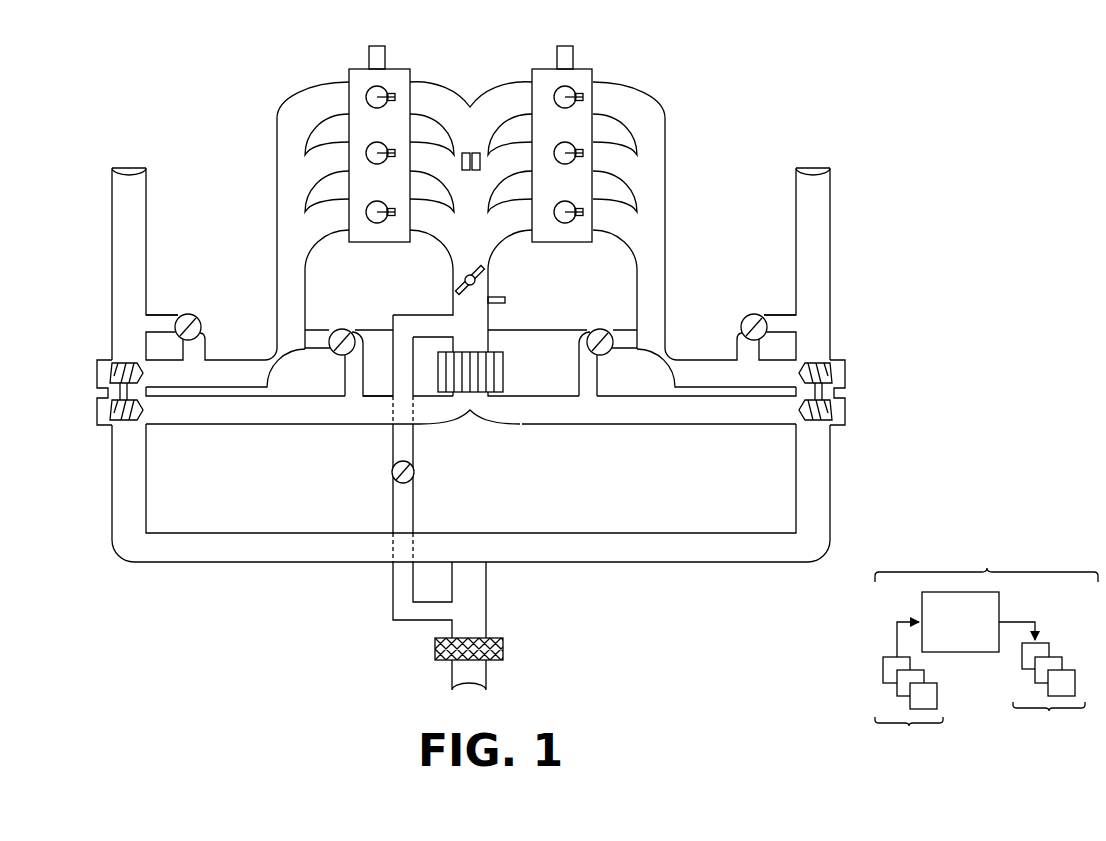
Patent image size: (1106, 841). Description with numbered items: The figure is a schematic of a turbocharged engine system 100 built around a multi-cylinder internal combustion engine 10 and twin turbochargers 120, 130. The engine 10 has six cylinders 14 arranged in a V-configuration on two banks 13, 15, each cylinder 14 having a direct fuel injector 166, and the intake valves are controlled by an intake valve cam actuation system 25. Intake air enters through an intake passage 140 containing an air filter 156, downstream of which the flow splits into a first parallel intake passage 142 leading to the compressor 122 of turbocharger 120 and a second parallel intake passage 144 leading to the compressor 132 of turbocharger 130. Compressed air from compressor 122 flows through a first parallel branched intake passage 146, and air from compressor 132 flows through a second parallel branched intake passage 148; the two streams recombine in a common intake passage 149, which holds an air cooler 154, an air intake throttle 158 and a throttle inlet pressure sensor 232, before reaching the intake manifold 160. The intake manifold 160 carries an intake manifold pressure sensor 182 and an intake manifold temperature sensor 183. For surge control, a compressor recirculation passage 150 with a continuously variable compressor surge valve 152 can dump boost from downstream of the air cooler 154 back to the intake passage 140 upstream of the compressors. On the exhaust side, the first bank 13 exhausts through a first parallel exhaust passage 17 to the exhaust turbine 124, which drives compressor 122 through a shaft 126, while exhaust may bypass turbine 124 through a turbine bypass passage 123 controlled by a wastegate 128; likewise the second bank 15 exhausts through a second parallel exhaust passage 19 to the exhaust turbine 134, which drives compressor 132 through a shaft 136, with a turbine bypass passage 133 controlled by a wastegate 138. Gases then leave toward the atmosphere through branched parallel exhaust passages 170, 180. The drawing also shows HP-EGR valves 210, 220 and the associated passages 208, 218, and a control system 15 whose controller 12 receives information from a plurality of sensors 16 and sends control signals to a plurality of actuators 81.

The internal combustion engine 10 is at (796, 69).
The turbocharged engine system 100 is at (1026, 67).
The intake manifold 160 is at (468, 84).
The second bank of cylinders / control system 15 is at (362, 69).
The first bank of cylinders 13 is at (583, 68).
The intake valve cam actuation system 25 is at (376, 49).
The cylinder 14 is at (561, 147).
The fuel injector 166 is at (576, 152).
The intake manifold pressure sensor 182 is at (462, 169).
The intake manifold temperature sensor 183 is at (480, 169).
The second parallel exhaust passage 19 is at (275, 289).
The first parallel exhaust passage 17 is at (666, 298).
The air intake throttle 158 is at (470, 274).
The throttle inlet pressure sensor 232 is at (505, 300).
The common intake passage 149 is at (489, 323).
The branched parallel exhaust passage 180 is at (146, 212).
The branched parallel exhaust passage 170 is at (795, 212).
The turbine bypass passage 133 is at (162, 315).
The wastegate 138 is at (202, 318).
The turbine bypass passage 123 is at (783, 314).
The wastegate 128 is at (741, 322).
The second exhaust conduit 218 is at (315, 329).
The HP-EGR valve 220 is at (343, 331).
The first exhaust conduit 208 is at (587, 349).
The HP-EGR valve 210 is at (594, 330).
The turbocharger 130 is at (125, 346).
The exhaust turbine 134 is at (112, 367).
The shaft 136 is at (110, 403).
The compressor 132 is at (137, 418).
The turbocharger 120 is at (813, 349).
The exhaust turbine 124 is at (829, 364).
The shaft 126 is at (826, 393).
The compressor 122 is at (807, 421).
The second parallel branched intake passage 148 is at (234, 427).
The first parallel branched intake passage 146 is at (625, 427).
The second parallel intake passage 144 is at (260, 530).
The first parallel intake passage 142 is at (632, 530).
The compressor recirculation passage 150 is at (393, 452).
The compressor surge valve 152 is at (414, 475).
The air cooler 154 is at (503, 368).
The air filter 156 is at (503, 648).
The intake passage 140 is at (452, 680).
The controller 12 is at (960, 622).
The sensors 16 is at (909, 694).
The actuators 81 is at (1042, 687).